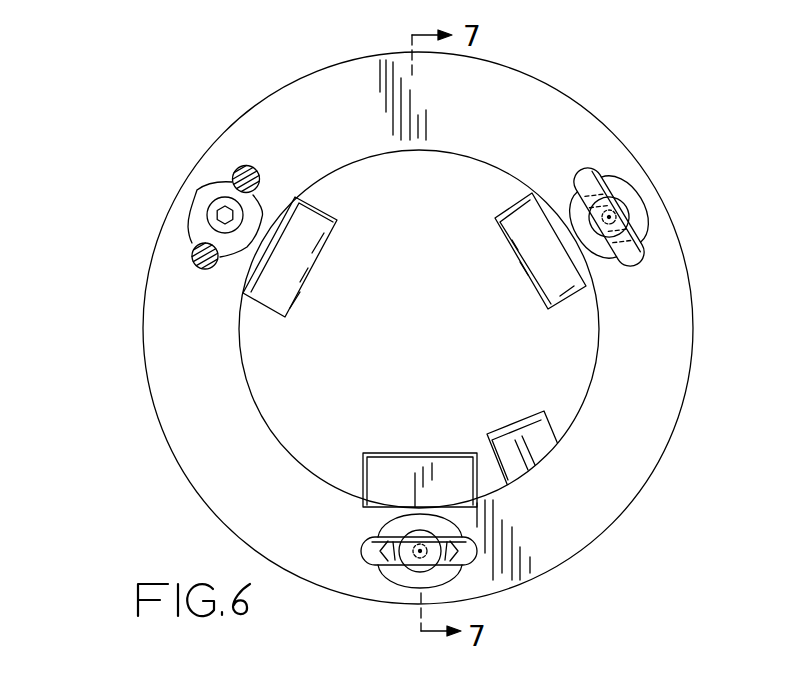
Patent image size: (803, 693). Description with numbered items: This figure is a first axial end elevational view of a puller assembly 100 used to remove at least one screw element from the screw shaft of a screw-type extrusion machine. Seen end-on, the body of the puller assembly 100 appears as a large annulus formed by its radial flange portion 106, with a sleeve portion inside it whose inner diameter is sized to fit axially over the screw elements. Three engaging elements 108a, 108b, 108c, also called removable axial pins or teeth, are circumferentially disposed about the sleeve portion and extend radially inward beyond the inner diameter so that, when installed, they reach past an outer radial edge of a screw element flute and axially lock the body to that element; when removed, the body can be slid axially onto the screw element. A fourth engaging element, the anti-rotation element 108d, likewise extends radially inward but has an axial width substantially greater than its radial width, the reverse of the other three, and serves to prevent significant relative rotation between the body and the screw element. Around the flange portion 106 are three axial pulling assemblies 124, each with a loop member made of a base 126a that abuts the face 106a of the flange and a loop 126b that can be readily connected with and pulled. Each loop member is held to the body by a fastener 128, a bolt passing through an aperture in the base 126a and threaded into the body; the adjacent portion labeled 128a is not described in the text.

The puller assembly 100 is at (116, 474).
The radial flange portion 106 is at (630, 410).
The face of the radial flange portion 106a is at (616, 483).
The engaging element 108a is at (508, 226).
The engaging element 108b is at (298, 268).
The engaging element 108c is at (398, 472).
The anti-rotation element 108d is at (527, 425).
The axial pulling assembly 124 is at (200, 275).
The base 126a is at (262, 200).
The loop 126b is at (622, 250).
The fastener 128 is at (205, 196).
The clamp body arm 128a is at (215, 222).